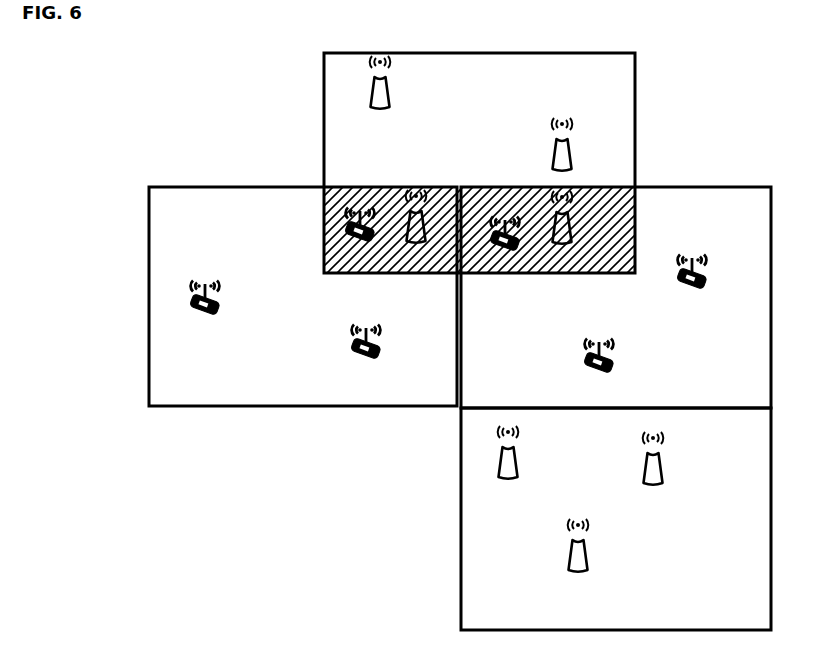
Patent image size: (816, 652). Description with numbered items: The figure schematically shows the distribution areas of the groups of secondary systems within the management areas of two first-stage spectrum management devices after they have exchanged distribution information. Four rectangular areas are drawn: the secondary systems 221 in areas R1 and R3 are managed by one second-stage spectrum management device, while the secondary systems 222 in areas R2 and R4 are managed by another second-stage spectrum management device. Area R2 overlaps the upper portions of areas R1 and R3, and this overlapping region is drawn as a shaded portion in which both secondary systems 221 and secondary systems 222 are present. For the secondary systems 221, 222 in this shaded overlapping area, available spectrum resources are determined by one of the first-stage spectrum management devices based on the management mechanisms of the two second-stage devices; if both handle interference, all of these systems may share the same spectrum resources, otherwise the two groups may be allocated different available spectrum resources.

The secondary systems 221 is at (459, 297).
The secondary systems 222 is at (530, 323).
The area R1 is at (303, 296).
The area R2 is at (479, 163).
The area R3 is at (616, 297).
The area R4 is at (616, 519).